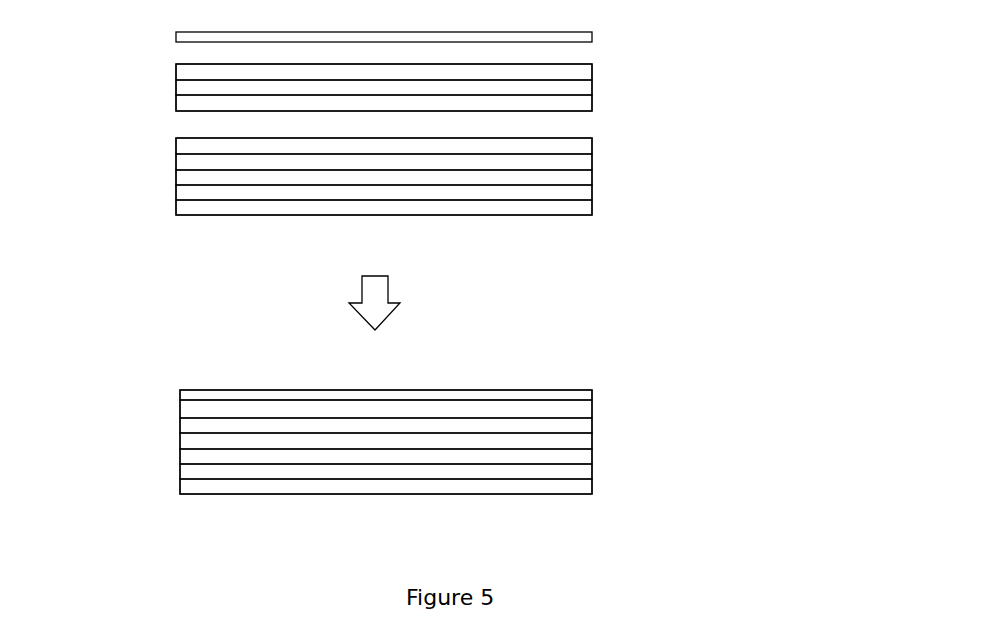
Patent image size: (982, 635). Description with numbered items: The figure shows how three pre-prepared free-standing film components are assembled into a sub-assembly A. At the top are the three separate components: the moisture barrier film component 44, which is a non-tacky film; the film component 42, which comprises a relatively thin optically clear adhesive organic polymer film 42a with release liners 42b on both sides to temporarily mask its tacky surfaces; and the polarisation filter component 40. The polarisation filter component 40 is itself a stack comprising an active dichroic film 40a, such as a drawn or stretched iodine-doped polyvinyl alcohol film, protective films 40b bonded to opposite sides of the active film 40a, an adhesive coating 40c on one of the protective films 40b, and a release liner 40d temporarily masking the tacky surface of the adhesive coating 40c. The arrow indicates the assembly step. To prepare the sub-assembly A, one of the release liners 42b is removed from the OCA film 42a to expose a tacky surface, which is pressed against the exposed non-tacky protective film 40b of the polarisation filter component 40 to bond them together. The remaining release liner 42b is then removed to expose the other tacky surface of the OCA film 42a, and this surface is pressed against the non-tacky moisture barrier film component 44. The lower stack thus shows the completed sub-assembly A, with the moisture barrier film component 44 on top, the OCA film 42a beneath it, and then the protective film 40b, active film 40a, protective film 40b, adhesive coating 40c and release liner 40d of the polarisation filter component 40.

The moisture barrier film component 44 is at (592, 36).
The free-standing film component 42 is at (165, 63).
The optically clear adhesive film 42a is at (592, 88).
The release liners 42b is at (592, 72).
The polarisation filter component 40 is at (172, 137).
The active film 40a is at (592, 162).
The protective films 40b is at (592, 146).
The adhesive coating 40c is at (592, 192).
The release liner 40d is at (592, 208).
The sub-assembly A is at (723, 377).